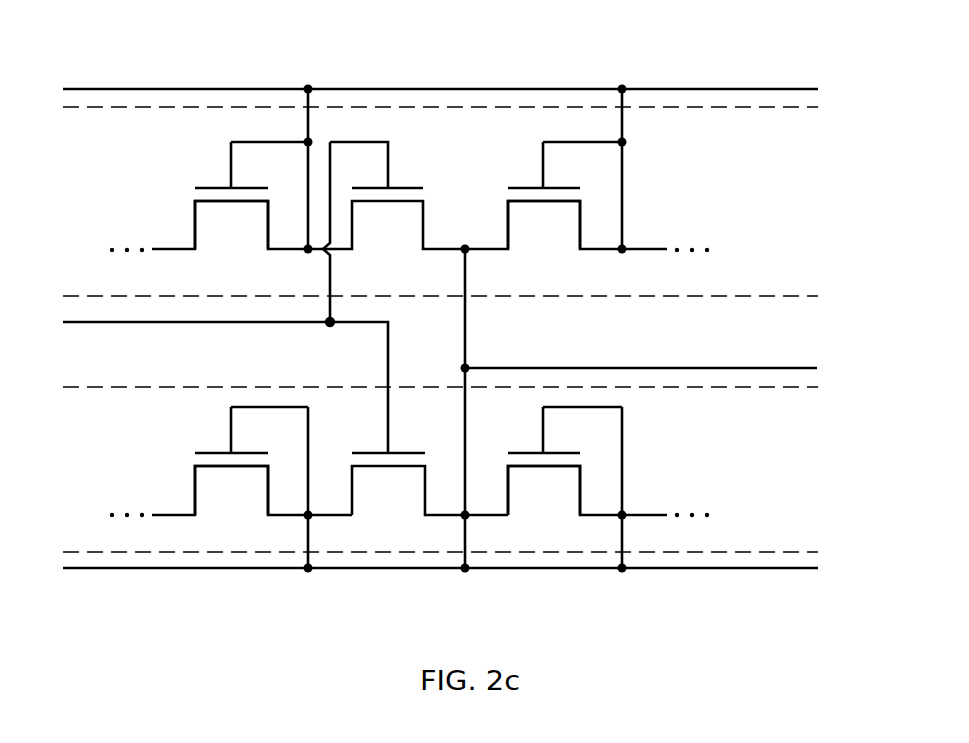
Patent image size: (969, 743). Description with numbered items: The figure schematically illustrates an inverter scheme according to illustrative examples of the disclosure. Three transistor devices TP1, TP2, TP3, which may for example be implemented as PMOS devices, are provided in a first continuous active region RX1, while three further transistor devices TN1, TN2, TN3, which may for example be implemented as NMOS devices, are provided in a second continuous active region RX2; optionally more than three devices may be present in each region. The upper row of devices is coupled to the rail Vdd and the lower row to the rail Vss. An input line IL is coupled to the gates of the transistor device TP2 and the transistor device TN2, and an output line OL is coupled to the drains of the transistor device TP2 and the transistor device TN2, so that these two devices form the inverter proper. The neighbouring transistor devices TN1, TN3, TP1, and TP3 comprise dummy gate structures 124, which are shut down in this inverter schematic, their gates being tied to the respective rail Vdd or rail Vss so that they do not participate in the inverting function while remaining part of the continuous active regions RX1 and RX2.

The dummy gate structures 124 is at (237, 212).
The transistor device TP1 is at (200, 154).
The transistor device TP2 is at (389, 214).
The transistor device TP3 is at (515, 155).
The transistor device TN1 is at (200, 418).
The transistor device TN2 is at (389, 477).
The transistor device TN3 is at (635, 417).
The rail Vdd is at (744, 88).
The rail Vss is at (744, 570).
The input line IL is at (146, 323).
The output line OL is at (744, 368).
The first continuous active region RX1 is at (806, 142).
The second continuous active region RX2 is at (803, 420).